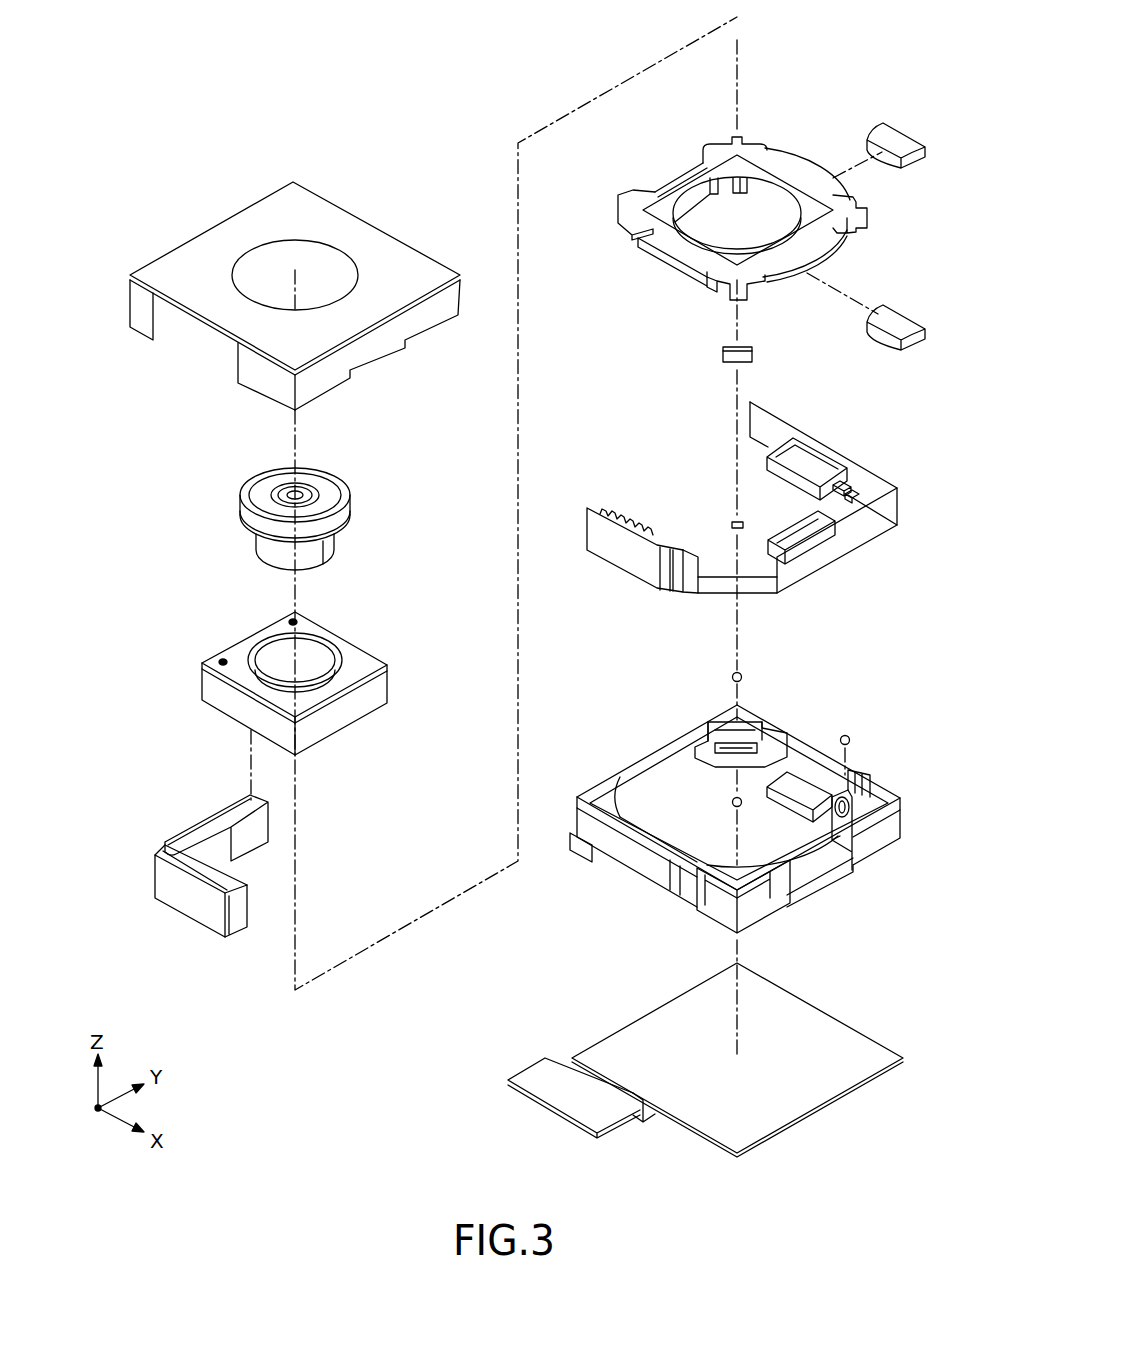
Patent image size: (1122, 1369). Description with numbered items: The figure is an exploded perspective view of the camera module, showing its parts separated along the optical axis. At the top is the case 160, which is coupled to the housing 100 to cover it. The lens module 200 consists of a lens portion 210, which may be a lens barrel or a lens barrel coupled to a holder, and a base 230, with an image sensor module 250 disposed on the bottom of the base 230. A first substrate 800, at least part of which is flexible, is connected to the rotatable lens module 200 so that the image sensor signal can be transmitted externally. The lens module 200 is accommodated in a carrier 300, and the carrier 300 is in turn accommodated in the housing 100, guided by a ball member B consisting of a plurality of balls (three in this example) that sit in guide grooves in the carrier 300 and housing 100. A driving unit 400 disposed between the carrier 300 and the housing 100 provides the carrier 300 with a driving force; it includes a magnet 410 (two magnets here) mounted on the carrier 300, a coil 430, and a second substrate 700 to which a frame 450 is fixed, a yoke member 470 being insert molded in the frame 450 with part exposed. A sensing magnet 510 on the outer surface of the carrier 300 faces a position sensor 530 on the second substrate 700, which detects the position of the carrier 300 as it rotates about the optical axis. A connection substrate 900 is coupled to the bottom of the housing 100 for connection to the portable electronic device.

The housing 100 is at (628, 852).
The case 160 is at (372, 238).
The lens module 200 is at (160, 598).
The lens portion 210 is at (268, 483).
The base 230 is at (237, 653).
The image sensor module 250 is at (225, 722).
The carrier 300 is at (762, 130).
The driving unit 400 is at (942, 270).
The magnet 410 is at (905, 138).
The coil 430 is at (802, 456).
The frame 450 is at (841, 482).
The yoke member 470 is at (848, 497).
The sensing magnet 510 is at (722, 353).
The position sensor 530 is at (730, 525).
The second substrate 700 is at (893, 508).
The first substrate 800 is at (171, 835).
The connection substrate 900 is at (858, 1047).
The ball member B is at (742, 677).